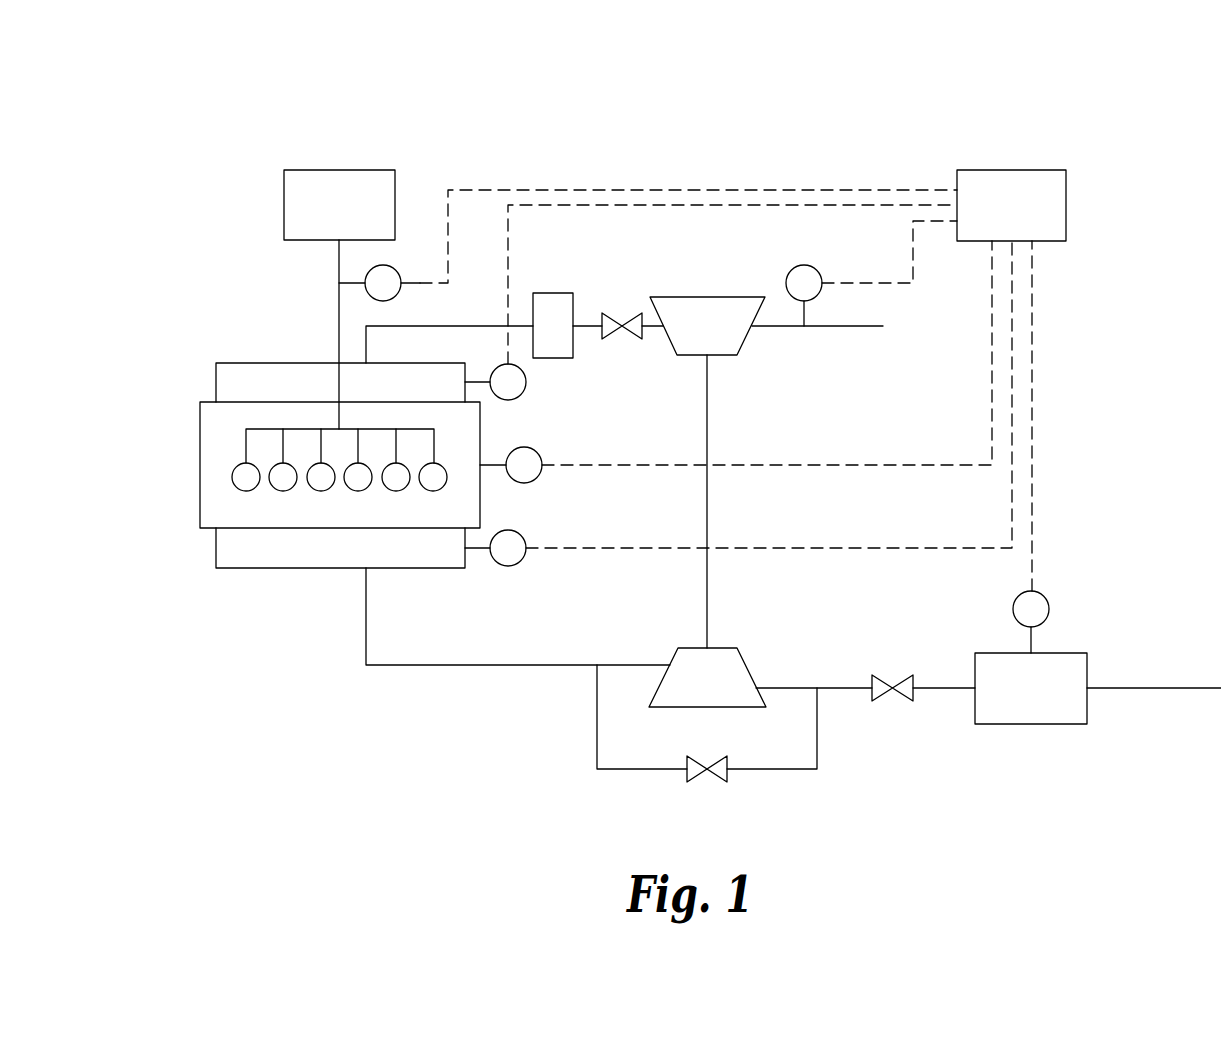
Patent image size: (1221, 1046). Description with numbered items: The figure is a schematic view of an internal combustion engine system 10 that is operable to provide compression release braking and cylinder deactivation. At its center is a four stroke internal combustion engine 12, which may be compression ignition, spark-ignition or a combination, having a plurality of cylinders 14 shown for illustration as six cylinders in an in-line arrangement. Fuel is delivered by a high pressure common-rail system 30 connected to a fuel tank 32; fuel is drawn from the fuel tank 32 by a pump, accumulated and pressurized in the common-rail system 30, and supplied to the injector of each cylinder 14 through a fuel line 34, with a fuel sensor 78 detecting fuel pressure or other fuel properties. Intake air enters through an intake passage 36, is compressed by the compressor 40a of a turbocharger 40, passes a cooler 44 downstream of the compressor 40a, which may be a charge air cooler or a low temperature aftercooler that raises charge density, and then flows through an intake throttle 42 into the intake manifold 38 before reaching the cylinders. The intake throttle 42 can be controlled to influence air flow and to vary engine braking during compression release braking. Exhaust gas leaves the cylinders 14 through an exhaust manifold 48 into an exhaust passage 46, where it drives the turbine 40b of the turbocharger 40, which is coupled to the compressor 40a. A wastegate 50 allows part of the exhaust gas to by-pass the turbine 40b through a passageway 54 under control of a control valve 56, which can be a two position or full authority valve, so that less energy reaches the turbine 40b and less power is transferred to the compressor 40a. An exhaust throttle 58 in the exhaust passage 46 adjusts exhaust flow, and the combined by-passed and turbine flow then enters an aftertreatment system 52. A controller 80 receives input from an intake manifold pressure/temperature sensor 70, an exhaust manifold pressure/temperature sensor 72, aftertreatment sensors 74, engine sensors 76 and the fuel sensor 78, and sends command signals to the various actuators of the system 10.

The internal combustion engine system 10 is at (704, 112).
The internal combustion engine 12 is at (200, 503).
The cylinders 14 is at (283, 492).
The high pressure common-rail system 30 is at (268, 431).
The fuel tank 32 is at (339, 299).
The fuel line 34 is at (246, 444).
The intake passage 36 is at (865, 328).
The intake manifold 38 is at (272, 366).
The turbocharger 40 is at (712, 433).
The compressor 40a is at (748, 340).
The turbine 40b is at (750, 672).
The intake throttle 42 is at (612, 339).
The cooler 44 is at (560, 293).
The exhaust passage 46 is at (452, 668).
The exhaust manifold 48 is at (238, 570).
The wastegate 50 is at (640, 770).
The aftertreatment system 52 is at (1098, 688).
The passageway 54 is at (797, 770).
The control valve 56 is at (700, 782).
The exhaust throttle 58 is at (895, 685).
The intake manifold pressure/temperature sensor 70 is at (526, 390).
The exhaust manifold pressure/temperature sensor 72 is at (520, 563).
The aftertreatment sensors 74 is at (1049, 600).
The engine sensors 76 is at (538, 478).
The fuel sensor 78 is at (391, 266).
The controller 80 is at (1011, 205).